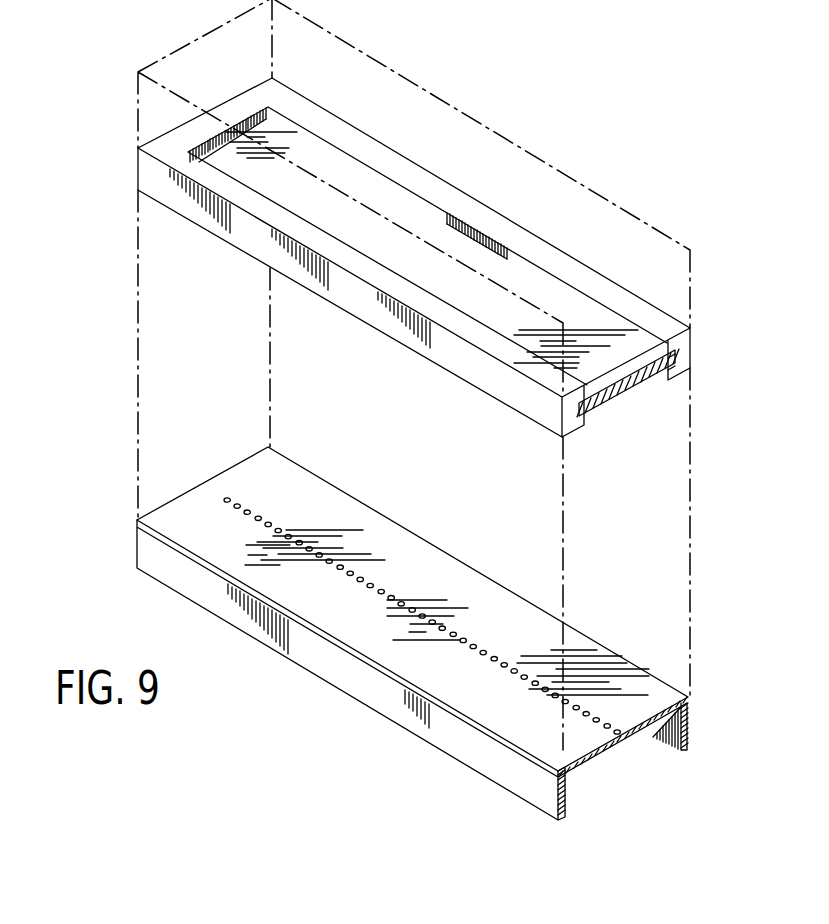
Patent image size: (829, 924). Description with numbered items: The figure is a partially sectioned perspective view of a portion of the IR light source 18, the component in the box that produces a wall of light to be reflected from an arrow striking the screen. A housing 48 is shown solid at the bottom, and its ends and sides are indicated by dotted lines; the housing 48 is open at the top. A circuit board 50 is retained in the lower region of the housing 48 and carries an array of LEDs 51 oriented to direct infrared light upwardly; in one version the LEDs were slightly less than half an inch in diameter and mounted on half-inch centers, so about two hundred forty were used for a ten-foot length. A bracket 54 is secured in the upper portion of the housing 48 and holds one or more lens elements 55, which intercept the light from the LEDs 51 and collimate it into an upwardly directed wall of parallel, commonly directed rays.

The IR light source 18 is at (640, 182).
The housing 48 is at (152, 549).
The circuit board 50 is at (400, 540).
The LEDs 51 is at (231, 485).
The bracket 54 is at (152, 176).
The lens elements 55 is at (634, 387).